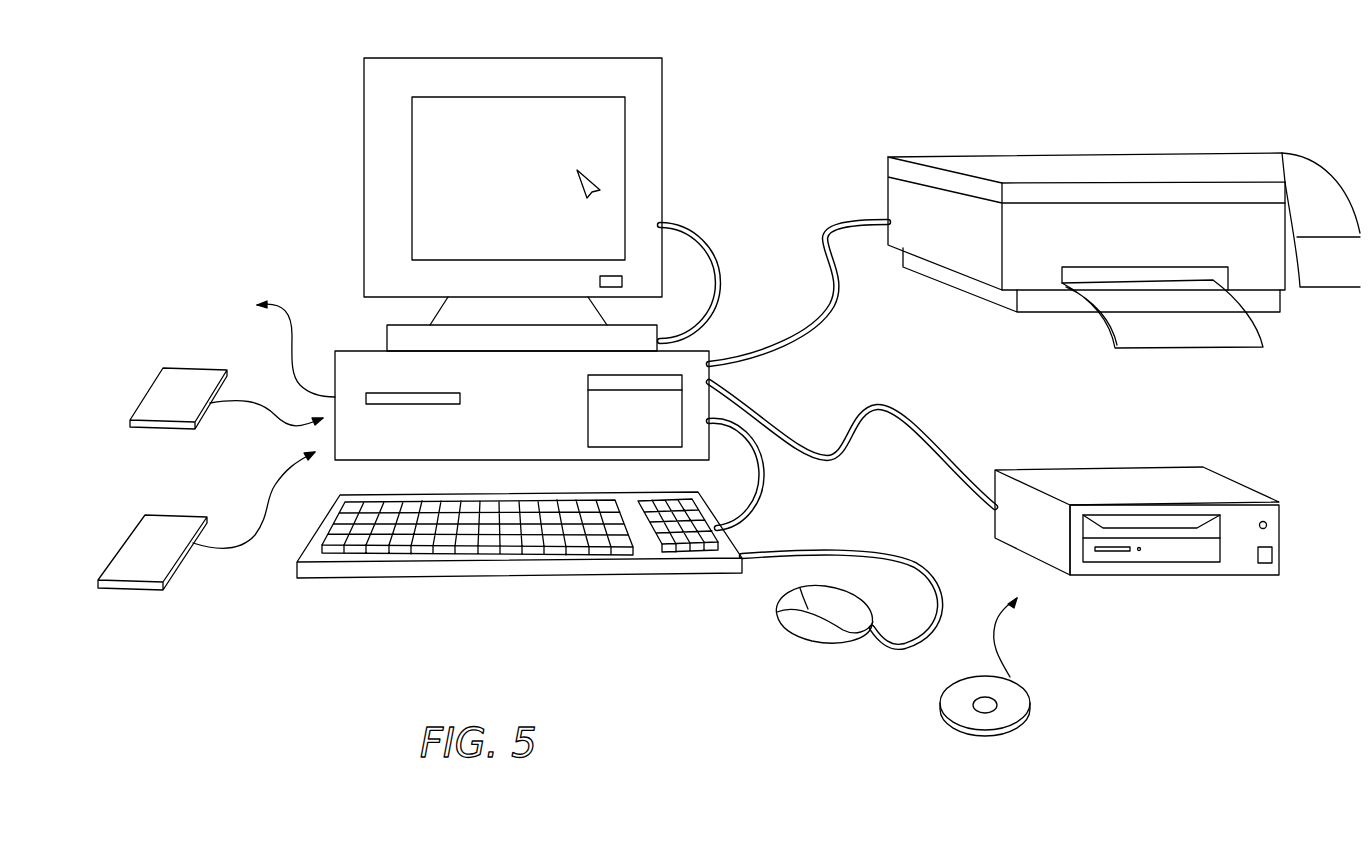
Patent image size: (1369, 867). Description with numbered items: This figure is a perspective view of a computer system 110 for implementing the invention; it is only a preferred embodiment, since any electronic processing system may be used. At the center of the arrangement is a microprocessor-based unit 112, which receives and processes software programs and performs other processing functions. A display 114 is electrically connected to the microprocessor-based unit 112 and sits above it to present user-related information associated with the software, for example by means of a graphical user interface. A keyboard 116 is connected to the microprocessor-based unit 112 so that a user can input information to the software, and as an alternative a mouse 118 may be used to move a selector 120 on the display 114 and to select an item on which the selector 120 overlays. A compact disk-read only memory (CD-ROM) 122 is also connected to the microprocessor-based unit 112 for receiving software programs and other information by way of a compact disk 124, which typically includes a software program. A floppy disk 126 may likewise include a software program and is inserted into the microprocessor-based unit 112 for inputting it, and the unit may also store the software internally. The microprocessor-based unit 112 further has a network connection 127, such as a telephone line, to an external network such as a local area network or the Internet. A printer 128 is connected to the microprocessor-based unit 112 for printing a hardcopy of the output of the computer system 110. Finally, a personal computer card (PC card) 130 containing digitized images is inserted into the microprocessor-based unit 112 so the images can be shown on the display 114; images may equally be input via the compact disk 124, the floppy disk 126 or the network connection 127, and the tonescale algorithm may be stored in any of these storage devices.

The computer system 110 is at (715, 378).
The microprocessor-based unit 112 is at (362, 350).
The display 114 is at (487, 58).
The keyboard 116 is at (343, 578).
The mouse 118 is at (812, 641).
The selector 120 is at (592, 178).
The compact disk-read only memory (CD-ROM) 122 is at (1102, 468).
The compact disk 124 is at (1030, 703).
The floppy disk 126 is at (150, 385).
The network connection 127 is at (270, 346).
The printer 128 is at (1082, 155).
The personal computer card (PC card) 130 is at (135, 530).